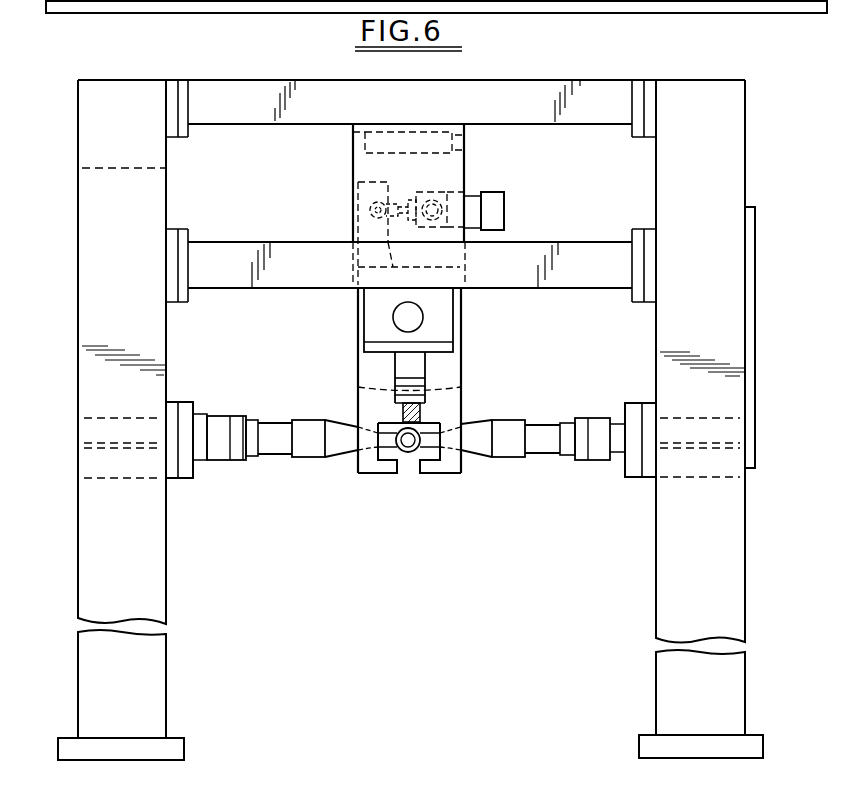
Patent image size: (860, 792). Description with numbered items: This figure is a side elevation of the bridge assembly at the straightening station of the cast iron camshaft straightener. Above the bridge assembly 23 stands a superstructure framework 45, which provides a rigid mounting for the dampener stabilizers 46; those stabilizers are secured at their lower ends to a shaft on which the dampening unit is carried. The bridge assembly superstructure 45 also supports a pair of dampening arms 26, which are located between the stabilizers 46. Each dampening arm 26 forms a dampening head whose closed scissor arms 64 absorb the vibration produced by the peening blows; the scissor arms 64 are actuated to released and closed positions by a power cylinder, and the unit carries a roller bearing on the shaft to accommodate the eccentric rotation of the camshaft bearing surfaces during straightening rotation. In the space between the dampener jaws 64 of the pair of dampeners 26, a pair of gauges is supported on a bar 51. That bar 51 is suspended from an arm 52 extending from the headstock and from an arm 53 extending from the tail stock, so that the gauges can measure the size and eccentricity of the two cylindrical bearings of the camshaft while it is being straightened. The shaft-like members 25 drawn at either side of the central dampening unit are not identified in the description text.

The tooling bridge assembly 23 is at (68, 573).
The superstructure framework 45 is at (65, 210).
The dampener stabilizer 46 is at (465, 169).
The dampening arm 26 is at (514, 198).
The arm 52 is at (400, 362).
The arm 53 is at (356, 381).
The bar 51 is at (425, 412).
The scissor arms 64 is at (378, 474).
The shaft 25 is at (278, 453).